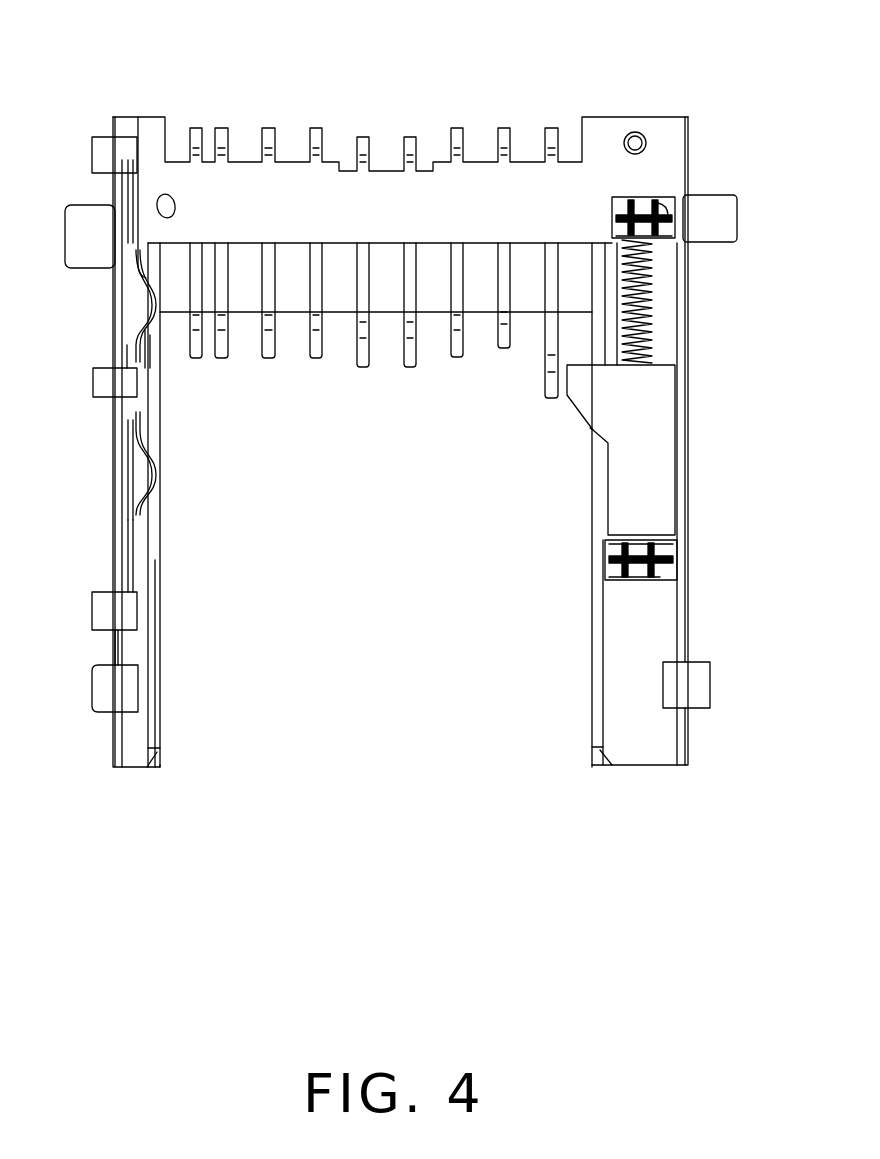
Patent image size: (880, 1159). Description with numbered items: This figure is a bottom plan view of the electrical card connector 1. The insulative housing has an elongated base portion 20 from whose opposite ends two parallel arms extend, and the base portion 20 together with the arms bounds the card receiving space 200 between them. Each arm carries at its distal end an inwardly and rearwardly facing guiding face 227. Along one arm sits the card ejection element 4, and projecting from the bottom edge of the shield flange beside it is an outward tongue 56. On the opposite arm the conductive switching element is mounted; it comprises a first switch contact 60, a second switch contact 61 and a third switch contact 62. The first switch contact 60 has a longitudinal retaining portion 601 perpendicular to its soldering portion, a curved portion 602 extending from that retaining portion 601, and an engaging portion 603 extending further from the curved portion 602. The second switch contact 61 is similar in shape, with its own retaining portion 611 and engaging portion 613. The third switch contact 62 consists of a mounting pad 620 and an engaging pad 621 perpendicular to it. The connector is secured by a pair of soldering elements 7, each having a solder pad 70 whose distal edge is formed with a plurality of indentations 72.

The electrical card connector 1 is at (626, 96).
The base portion 20 is at (482, 185).
The card ejection element 4 is at (660, 449).
The outward tongue 56 is at (705, 213).
The soldering elements 7 is at (690, 683).
The second switch contact 61 is at (103, 150).
The retaining portion 611 is at (135, 225).
The engaging portion 613 is at (133, 345).
The engaging pad 621 is at (140, 362).
The mounting pad 620 is at (120, 380).
The third switch contact 62 is at (105, 387).
The engaging portion 603 is at (130, 425).
The curved portion 602 is at (150, 470).
The retaining portion 601 is at (135, 530).
The first switch contact 60 is at (105, 612).
The solder pad 70 is at (120, 693).
The indentations 72 is at (93, 693).
The guiding face 227 is at (152, 760).
The card receiving space 200 is at (372, 710).